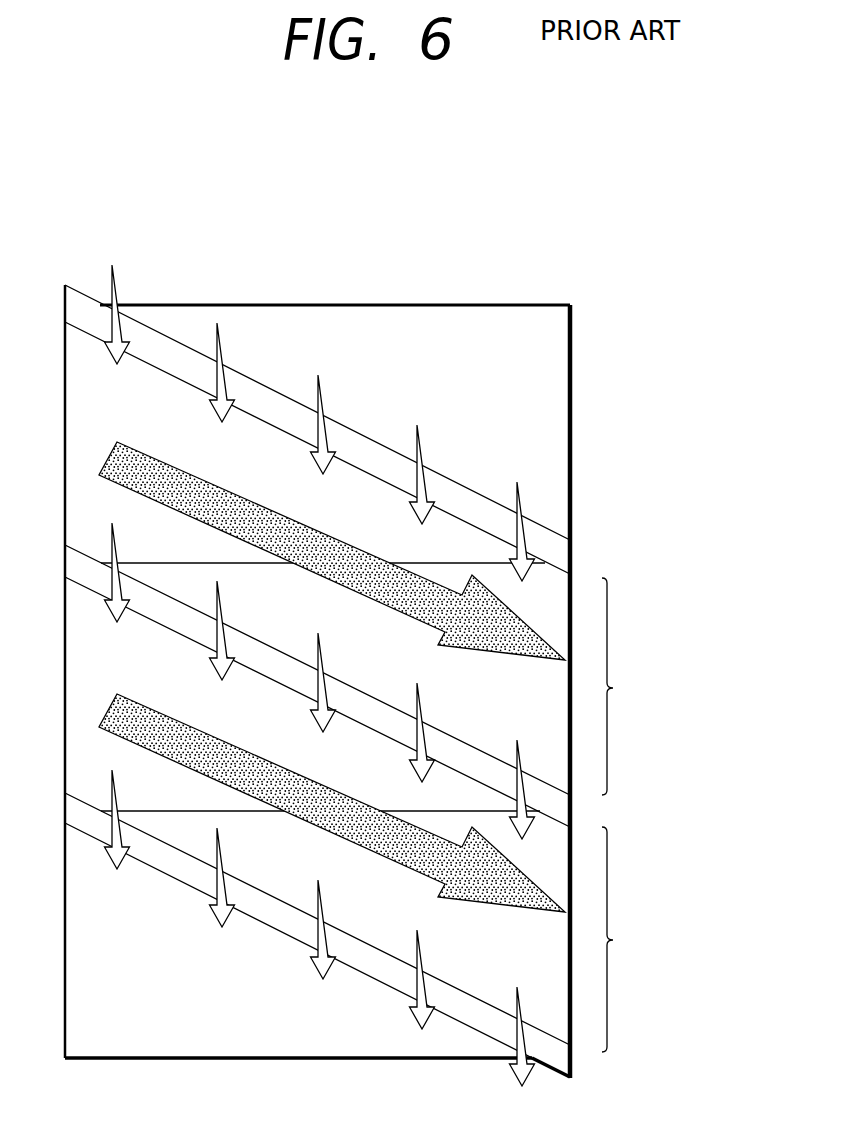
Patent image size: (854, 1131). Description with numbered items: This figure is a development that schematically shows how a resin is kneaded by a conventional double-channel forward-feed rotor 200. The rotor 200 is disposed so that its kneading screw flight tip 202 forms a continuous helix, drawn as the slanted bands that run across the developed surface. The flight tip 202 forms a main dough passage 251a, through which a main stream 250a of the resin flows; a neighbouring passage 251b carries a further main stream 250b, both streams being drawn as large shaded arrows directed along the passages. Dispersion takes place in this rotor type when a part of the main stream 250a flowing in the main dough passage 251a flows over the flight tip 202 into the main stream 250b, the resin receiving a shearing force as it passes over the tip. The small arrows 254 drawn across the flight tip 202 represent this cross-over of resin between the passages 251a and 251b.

The double-channel forward-feed rotor 200 is at (524, 284).
The kneading screw flight tip 202 is at (473, 508).
The emitted light rays 254 is at (520, 545).
The main stream 250a is at (540, 633).
The main stream 250b is at (537, 877).
The main dough passage 251a is at (641, 686).
The second emission region 251b is at (641, 939).